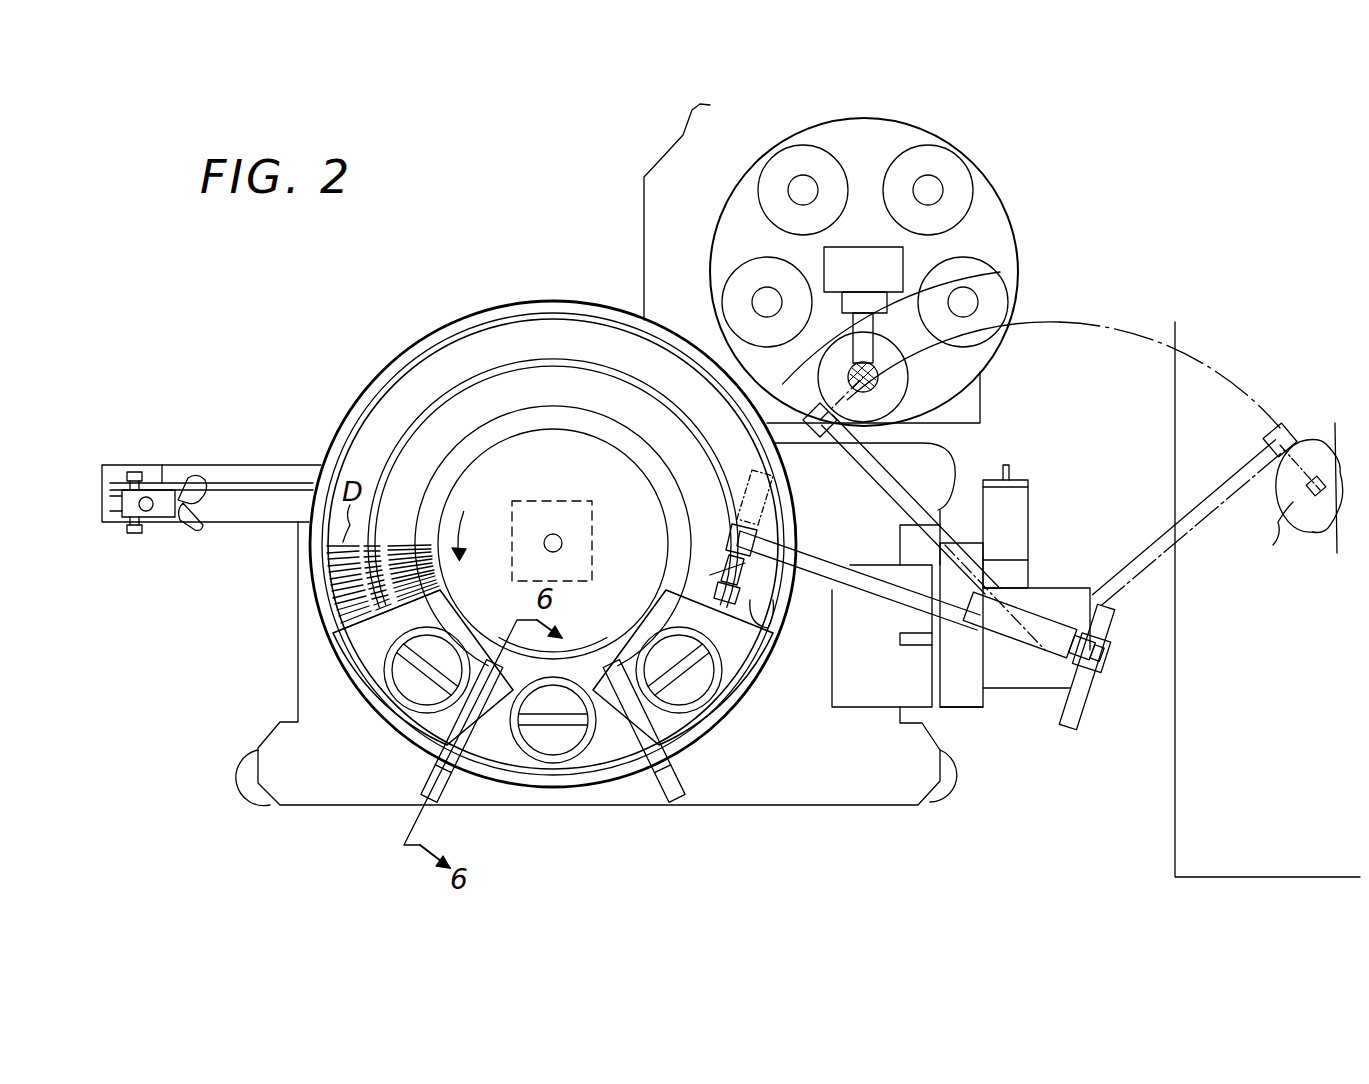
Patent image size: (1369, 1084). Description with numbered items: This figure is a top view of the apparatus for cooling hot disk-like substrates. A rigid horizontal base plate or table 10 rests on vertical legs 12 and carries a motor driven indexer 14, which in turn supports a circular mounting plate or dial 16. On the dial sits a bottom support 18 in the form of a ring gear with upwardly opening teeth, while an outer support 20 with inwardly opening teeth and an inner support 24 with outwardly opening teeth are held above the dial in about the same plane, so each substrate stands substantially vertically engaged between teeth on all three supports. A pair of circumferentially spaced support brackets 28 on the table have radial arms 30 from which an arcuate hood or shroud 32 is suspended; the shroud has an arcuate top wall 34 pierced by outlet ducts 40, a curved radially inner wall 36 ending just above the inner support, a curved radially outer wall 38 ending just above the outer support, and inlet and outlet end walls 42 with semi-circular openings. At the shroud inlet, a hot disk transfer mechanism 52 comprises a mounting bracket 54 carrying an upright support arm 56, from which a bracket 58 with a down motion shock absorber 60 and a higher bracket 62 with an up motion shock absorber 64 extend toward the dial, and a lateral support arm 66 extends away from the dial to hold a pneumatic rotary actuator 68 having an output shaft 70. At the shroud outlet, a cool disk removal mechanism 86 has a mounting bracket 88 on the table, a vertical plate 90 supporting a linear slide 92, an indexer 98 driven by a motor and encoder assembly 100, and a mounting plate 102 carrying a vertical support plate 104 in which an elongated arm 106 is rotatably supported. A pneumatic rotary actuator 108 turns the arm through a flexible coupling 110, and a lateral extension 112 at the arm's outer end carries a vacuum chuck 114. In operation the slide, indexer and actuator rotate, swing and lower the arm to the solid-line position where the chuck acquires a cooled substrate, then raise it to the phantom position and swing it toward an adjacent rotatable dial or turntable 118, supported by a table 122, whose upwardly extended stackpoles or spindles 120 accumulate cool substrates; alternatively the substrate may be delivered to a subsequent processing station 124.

The base plate or table 10 is at (780, 778).
The vertical legs 12 is at (258, 462).
The motor driven indexer 14 is at (562, 506).
The circular mounting plate or dial 16 is at (478, 355).
The bottom support 18 is at (537, 358).
The outer support 20 is at (508, 308).
The inner support 24 is at (489, 438).
The support brackets 28 is at (455, 795).
The radial arms 30 is at (425, 743).
The arcuate hood or shroud 32 is at (420, 722).
The arcuate top wall 34 is at (752, 672).
The radially inner wall 36 is at (580, 632).
The radially outer wall 38 is at (598, 790).
The outlet ducts 40 is at (390, 692).
The inlet and outlet end walls 42 is at (333, 632).
The hot disk transfer mechanism 52 is at (180, 515).
The mounting bracket 54 is at (250, 505).
The upright support arm 56 is at (125, 505).
The bracket 58 is at (231, 489).
The down motion shock absorber 60 is at (190, 482).
The bracket 62 is at (231, 489).
The up motion shock absorber 64 is at (231, 489).
The lateral support arm 66 is at (130, 569).
The pneumatic rotary actuator 68 is at (130, 569).
The output shaft 70 is at (130, 569).
The cool disk removal mechanism 86 is at (1000, 698).
The mounting bracket 88 is at (886, 616).
The vertical plate 90 is at (966, 708).
The linear slide 92 is at (975, 712).
The indexer 98 is at (1085, 588).
The motor and encoder assembly 100 is at (1012, 520).
The mounting plate 102 is at (1020, 600).
The vertical support plate 104 is at (918, 636).
The elongated arm 106 is at (828, 572).
The pneumatic rotary actuator 108 is at (1114, 666).
The flexible coupling 110 is at (1100, 672).
The lateral extension 112 is at (778, 592).
The vacuum chuck 114 is at (720, 556).
The rotatable dial or turntable 118 is at (1013, 242).
The stackpoles or spindles 120 is at (803, 185).
The table 122 is at (658, 213).
The subsequent processing station 124 is at (1172, 732).